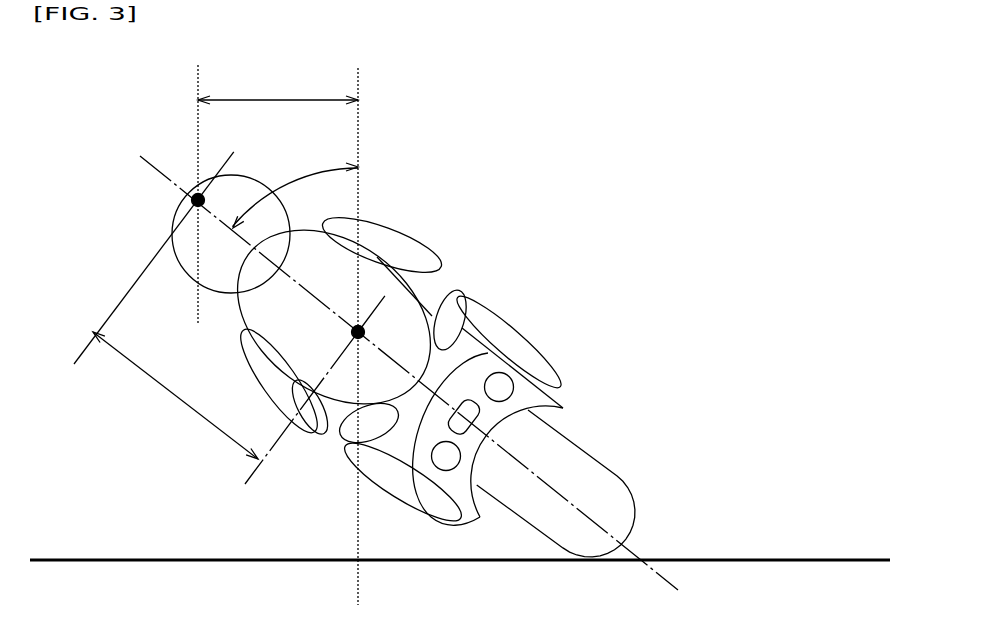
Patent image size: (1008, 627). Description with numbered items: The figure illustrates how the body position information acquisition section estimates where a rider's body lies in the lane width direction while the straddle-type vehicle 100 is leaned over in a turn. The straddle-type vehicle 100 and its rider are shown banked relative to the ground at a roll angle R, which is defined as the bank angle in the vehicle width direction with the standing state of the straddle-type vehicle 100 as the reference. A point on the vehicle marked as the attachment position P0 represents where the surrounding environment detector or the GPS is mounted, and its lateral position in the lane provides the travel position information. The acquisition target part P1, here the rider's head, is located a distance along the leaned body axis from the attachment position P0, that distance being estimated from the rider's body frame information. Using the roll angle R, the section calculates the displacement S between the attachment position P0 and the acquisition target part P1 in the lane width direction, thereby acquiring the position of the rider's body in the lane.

The straddle-type vehicle 100 is at (664, 94).
The attachment position P0 is at (358, 332).
The acquisition target part P1 is at (191, 201).
The displacement S is at (278, 90).
The roll angle R is at (295, 195).